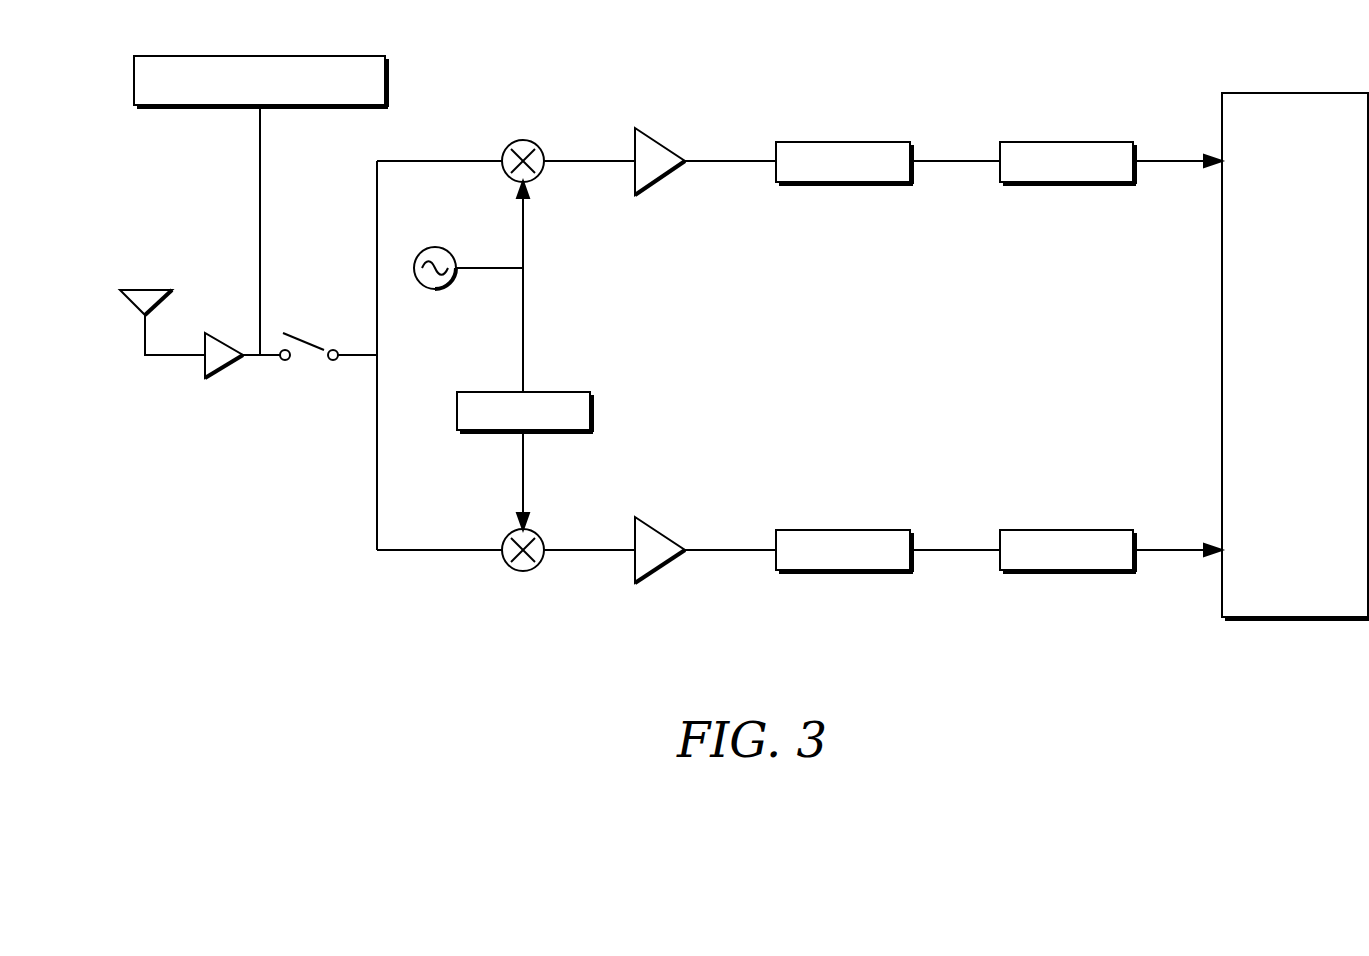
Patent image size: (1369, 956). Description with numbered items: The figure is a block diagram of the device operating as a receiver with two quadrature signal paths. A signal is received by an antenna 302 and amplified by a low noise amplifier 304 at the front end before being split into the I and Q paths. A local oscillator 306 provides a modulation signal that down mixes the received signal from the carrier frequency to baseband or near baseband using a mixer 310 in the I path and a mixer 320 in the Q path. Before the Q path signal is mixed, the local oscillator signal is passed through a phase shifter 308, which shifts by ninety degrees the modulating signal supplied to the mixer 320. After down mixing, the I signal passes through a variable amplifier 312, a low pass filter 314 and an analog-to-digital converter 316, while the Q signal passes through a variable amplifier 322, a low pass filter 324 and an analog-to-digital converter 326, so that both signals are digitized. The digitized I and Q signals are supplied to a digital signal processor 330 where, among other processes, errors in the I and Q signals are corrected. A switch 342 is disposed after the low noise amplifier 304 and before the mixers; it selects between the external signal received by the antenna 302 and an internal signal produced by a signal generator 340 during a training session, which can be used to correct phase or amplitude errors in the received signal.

The antenna 302 is at (135, 290).
The low noise amplifier 304 is at (229, 333).
The local oscillator 306 is at (437, 246).
The phase shifter 308 is at (457, 408).
The mixer 310 is at (507, 146).
The variable amplifier 312 is at (664, 145).
The low pass filter 314 is at (790, 142).
The analog-to-digital converter 316 is at (1012, 142).
The mixer 320 is at (508, 536).
The variable amplifier 322 is at (664, 533).
The low pass filter 324 is at (790, 530).
The analog-to-digital converter 326 is at (1012, 530).
The digital signal processor 330 is at (1238, 93).
The signal generator 340 is at (143, 56).
The switch 342 is at (311, 340).